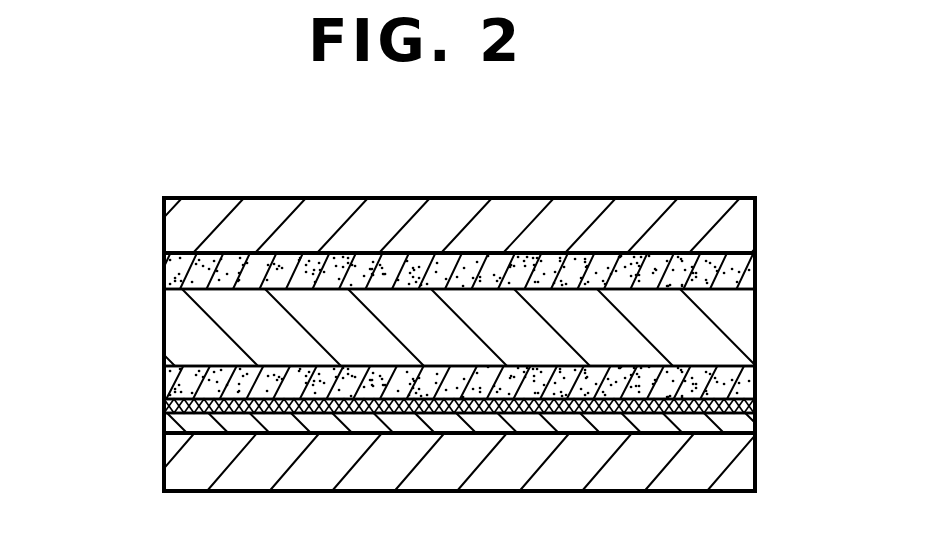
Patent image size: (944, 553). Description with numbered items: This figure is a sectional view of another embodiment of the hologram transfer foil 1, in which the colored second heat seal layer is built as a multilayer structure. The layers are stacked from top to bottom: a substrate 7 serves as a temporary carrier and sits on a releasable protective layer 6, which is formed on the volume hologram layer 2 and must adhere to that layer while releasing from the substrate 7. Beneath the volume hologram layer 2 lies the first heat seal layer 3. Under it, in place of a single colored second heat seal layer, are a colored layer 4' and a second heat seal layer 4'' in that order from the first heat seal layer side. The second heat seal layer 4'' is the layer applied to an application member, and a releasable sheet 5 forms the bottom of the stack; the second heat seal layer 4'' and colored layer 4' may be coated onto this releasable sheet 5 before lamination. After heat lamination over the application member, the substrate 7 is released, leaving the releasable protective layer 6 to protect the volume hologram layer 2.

The hologram transfer foil 1 is at (112, 328).
The volume hologram layer 2 is at (743, 322).
The first heat seal layer 3 is at (755, 377).
The colored layer 4' is at (519, 386).
The second heat seal layer 4'' is at (523, 427).
The releasable sheet 5 is at (745, 465).
The releasable protective layer 6 is at (752, 266).
The substrate 7 is at (747, 218).